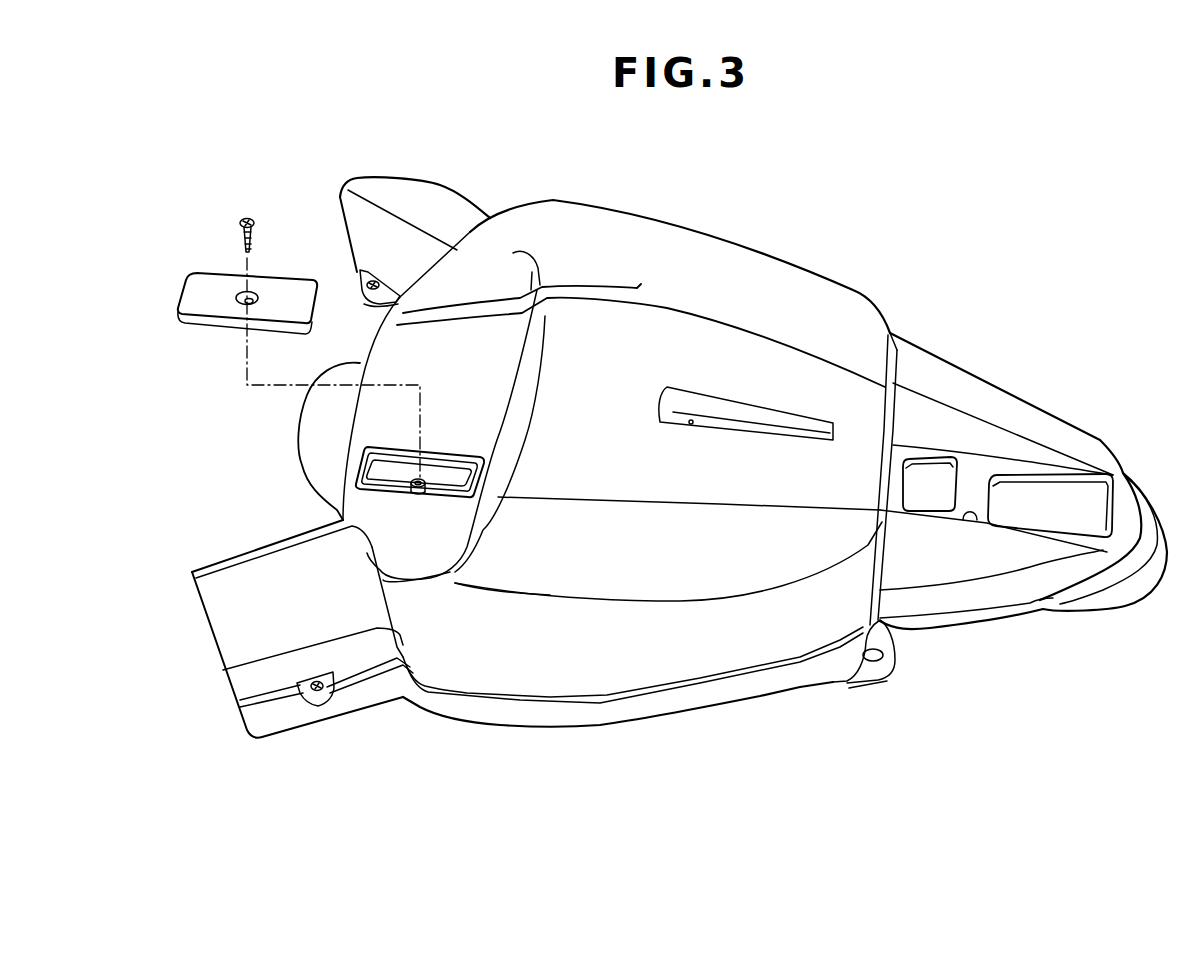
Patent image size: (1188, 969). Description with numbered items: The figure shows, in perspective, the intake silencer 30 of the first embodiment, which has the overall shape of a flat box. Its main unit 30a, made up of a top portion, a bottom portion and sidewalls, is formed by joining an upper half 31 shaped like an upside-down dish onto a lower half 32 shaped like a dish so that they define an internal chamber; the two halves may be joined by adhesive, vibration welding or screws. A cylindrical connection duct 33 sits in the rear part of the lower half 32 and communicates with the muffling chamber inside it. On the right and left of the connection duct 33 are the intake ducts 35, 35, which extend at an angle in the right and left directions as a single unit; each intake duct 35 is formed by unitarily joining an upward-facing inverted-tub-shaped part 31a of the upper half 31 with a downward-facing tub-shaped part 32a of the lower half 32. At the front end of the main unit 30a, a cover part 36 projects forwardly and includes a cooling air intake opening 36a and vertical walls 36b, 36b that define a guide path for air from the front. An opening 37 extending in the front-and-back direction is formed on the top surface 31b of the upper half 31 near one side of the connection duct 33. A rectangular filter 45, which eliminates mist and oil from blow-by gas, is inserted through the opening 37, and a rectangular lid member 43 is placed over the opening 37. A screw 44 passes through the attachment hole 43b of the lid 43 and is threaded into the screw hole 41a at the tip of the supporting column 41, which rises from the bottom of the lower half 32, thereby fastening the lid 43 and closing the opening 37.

The intake silencer 30 is at (863, 158).
The main unit 30a is at (793, 160).
The upper half 31 is at (903, 222).
The inverted-tub-shaped part 31a is at (170, 740).
The top surface 31b is at (567, 393).
The lower half 32 is at (612, 790).
The tub-shaped part 32a is at (281, 798).
The connection duct 33 is at (254, 495).
The intake duct 35 is at (170, 665).
The cover part 36 is at (1157, 377).
The cooling air intake opening 36a is at (1027, 650).
The vertical wall 36b is at (940, 700).
The opening 37 is at (442, 448).
The supporting column 41 is at (553, 478).
The screw hole 41a is at (443, 597).
The lid member 43 is at (162, 372).
The attachment hole 43b is at (212, 398).
The screw 44 is at (295, 160).
The filter 45 is at (393, 473).